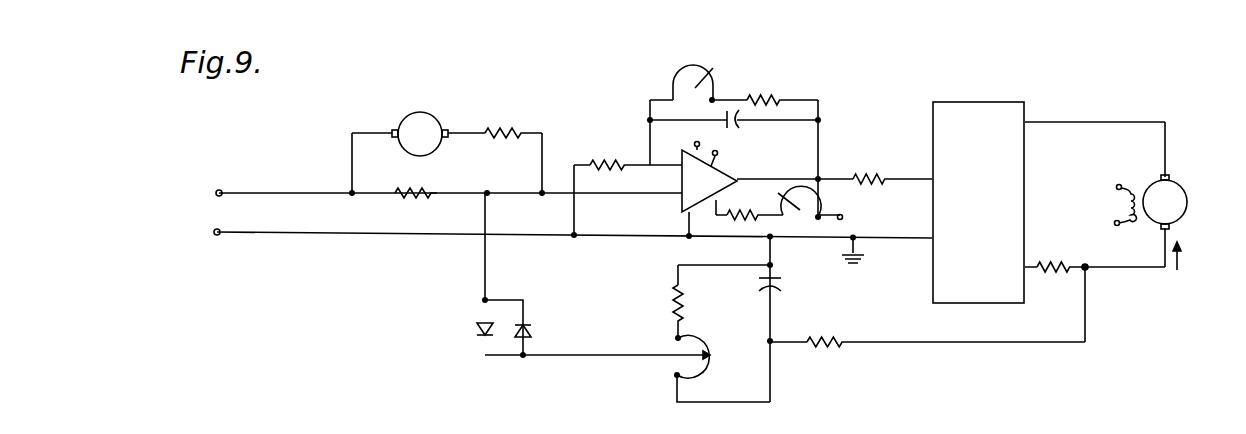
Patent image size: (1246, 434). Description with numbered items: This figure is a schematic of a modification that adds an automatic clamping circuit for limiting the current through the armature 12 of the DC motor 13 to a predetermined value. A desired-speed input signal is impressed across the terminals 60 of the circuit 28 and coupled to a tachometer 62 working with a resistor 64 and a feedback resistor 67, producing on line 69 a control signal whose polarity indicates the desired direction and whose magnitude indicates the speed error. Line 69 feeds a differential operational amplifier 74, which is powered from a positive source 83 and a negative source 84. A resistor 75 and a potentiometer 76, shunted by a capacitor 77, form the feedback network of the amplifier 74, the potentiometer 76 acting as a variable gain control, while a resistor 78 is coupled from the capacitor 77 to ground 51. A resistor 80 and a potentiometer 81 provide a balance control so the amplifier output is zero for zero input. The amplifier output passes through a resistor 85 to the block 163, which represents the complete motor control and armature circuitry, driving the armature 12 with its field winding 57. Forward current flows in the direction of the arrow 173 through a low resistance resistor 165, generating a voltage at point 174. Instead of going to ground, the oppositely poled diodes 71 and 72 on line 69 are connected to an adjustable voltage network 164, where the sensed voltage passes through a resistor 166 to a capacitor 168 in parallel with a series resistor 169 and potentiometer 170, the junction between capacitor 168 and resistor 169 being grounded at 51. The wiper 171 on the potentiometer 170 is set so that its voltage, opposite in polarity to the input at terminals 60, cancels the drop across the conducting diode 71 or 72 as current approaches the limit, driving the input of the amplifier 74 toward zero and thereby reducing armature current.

The terminals 60 is at (217, 228).
The tachometer 62 is at (416, 118).
The resistor 64 is at (497, 132).
The resistor 67 is at (420, 190).
The circuit 28 is at (588, 116).
The resistor 78 is at (615, 163).
The line 69 is at (595, 196).
The differential operational amplifier 74 is at (712, 193).
The positive source of DC potential 83 is at (695, 143).
The negative source of DC potential 84 is at (722, 154).
The potentiometer 76 is at (673, 76).
The resistor 75 is at (769, 98).
The capacitor 77 is at (741, 123).
The resistor 80 is at (747, 213).
The potentiometer 81 is at (830, 203).
The resistor 85 is at (877, 177).
The block 163 is at (995, 187).
The DC motor 13 is at (1150, 166).
The armature 12 is at (1176, 211).
The field winding 57 is at (1121, 200).
The ground 51 is at (866, 252).
The resistor 165 is at (1063, 264).
The point 174 is at (1088, 271).
The arrow 173 is at (1180, 258).
The resistor 166 is at (830, 336).
The capacitor 168 is at (783, 286).
The resistor 169 is at (675, 305).
The adjustable voltage network 164 is at (740, 321).
The potentiometer 170 is at (712, 368).
The wiper 171 is at (677, 347).
The diode 71 is at (473, 332).
The diode 72 is at (533, 333).